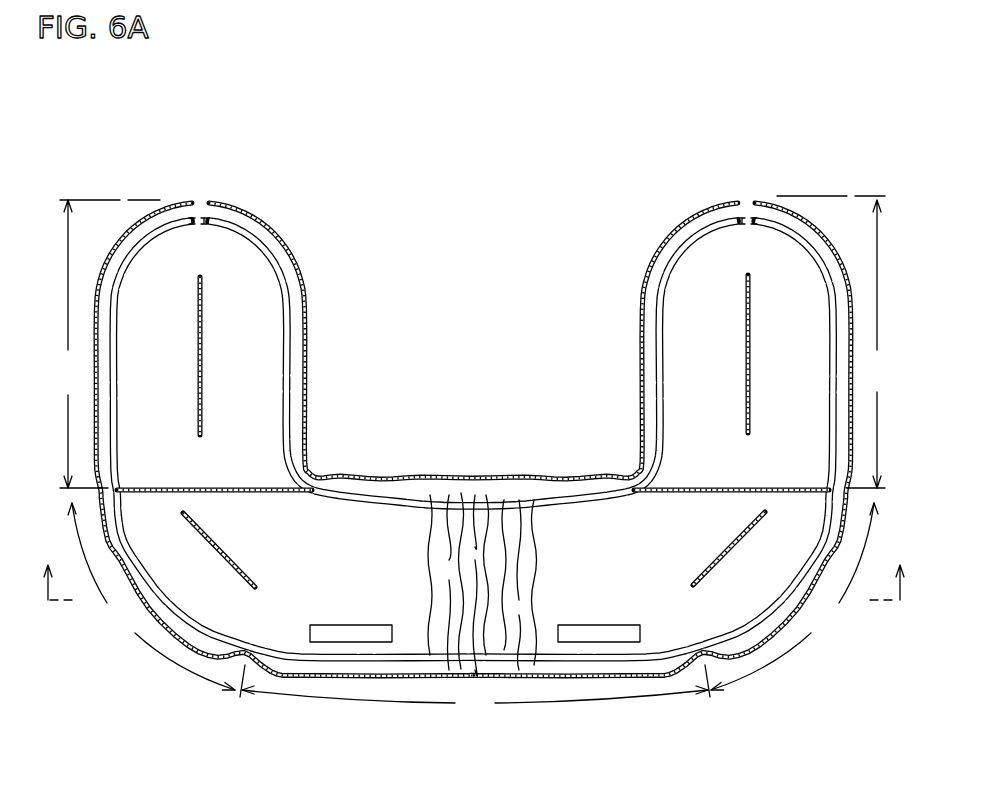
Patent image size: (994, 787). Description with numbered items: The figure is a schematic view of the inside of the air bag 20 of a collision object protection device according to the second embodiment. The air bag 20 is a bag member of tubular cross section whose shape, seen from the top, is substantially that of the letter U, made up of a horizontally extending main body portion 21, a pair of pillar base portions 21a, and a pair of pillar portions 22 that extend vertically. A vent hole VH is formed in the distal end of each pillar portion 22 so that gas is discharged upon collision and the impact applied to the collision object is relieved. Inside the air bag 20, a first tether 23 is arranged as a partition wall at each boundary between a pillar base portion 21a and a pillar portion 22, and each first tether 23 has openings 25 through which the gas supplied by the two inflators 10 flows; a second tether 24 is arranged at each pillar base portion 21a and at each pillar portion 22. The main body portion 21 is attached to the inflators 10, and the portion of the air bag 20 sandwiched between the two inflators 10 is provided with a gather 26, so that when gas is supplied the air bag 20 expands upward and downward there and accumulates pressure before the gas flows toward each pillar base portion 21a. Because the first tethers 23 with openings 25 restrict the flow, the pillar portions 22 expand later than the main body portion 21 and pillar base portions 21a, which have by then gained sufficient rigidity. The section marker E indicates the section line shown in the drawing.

The inflator 10 is at (367, 643).
The air bag 20 is at (475, 237).
The main body portion 21 is at (475, 691).
The pillar base portion 21a is at (473, 596).
The pillar portion 22 is at (473, 342).
The first tether 23 is at (244, 492).
The second tether 24 is at (195, 360).
The opening 25 is at (157, 486).
The gather 26 is at (493, 520).
The vent hole VH is at (202, 186).
The section line E- E is at (473, 583).